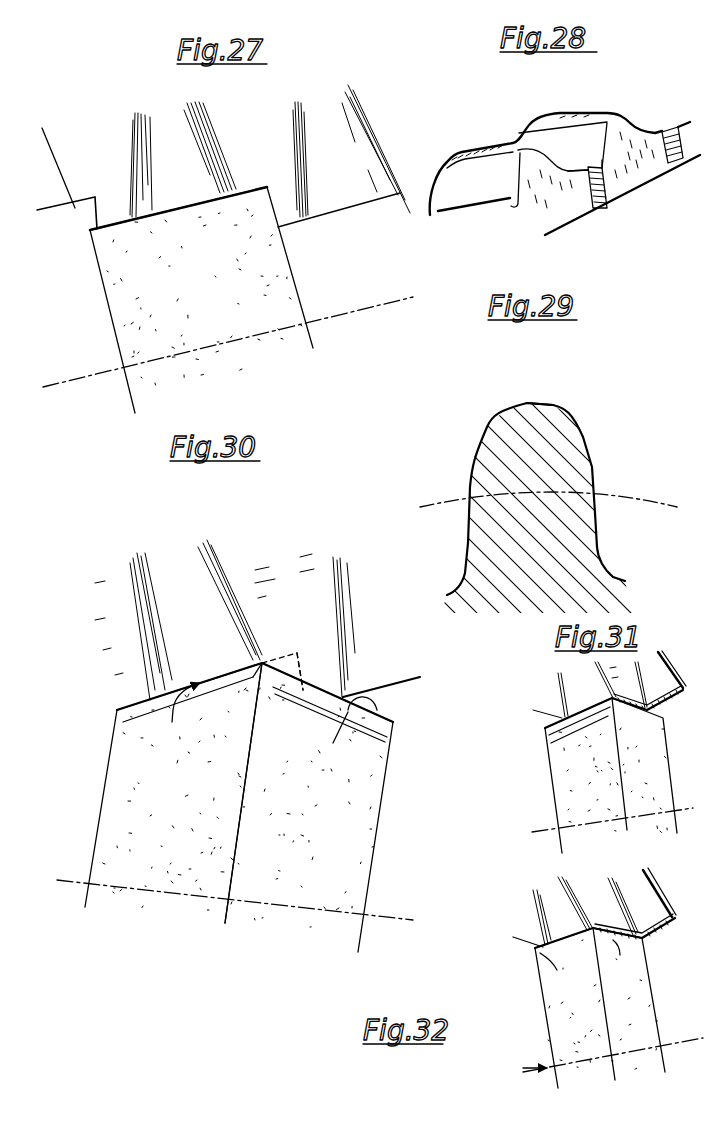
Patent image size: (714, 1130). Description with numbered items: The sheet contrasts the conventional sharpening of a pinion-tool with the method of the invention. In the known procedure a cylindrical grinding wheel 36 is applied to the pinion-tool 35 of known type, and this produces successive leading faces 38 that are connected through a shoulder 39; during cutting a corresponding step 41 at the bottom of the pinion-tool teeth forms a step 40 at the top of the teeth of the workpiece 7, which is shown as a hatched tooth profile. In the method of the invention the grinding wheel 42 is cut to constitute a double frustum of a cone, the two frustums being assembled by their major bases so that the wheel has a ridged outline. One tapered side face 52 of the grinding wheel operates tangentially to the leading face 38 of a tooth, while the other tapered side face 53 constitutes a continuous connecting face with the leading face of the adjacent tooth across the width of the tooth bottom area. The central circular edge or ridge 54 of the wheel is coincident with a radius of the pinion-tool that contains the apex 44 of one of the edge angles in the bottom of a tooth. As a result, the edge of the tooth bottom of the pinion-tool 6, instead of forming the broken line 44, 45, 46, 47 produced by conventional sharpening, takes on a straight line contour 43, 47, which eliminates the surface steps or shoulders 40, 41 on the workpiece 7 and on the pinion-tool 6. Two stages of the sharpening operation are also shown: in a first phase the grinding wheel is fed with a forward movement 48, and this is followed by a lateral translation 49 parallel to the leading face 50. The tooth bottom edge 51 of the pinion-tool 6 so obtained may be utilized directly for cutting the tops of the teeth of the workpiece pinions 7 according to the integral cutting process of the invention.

In FIG. 31, the pinion-tool 6 is at (663, 677).
In FIG. 32, the pinion-tool 6 is at (642, 888).
In FIG. 29, the workpiece 7 is at (572, 472).
In FIG. 27, the pinion-tool of known type 35 is at (102, 177).
In FIG. 27, the cylindrical grinding wheel 36 is at (127, 296).
In FIG. 27, the leading face 38 is at (340, 213).
In FIG. 28, the leading face 38 is at (630, 172).
In FIG. 27, the shoulder 39 is at (95, 213).
In FIG. 28, the shoulder 39 is at (597, 194).
In FIG. 30, the shoulder 39 is at (302, 660).
In FIG. 29, the step 40 is at (527, 403).
In FIG. 28, the step 41 is at (588, 164).
In FIG. 30, the grinding wheel 42 is at (132, 803).
In FIG. 31, the grinding wheel 42 is at (565, 752).
In FIG. 32, the grinding wheel 42 is at (562, 1022).
In FIG. 30, the straight line contour 43 is at (293, 677).
In FIG. 30, the apex of edge angle 44 is at (265, 658).
In FIG. 30, the broken line segment 45 is at (293, 650).
In FIG. 30, the broken line segment 46 is at (313, 707).
In FIG. 30, the edge segment 47 is at (342, 693).
In FIG. 31, the forward movement 48 is at (577, 763).
In FIG. 32, the lateral translation 49 is at (618, 978).
In FIG. 32, the leading face 50 is at (562, 947).
In FIG. 32, the tooth bottom edge 51 is at (617, 939).
In FIG. 30, the tapered side face 52 is at (180, 715).
In FIG. 30, the tapered side face 53 is at (332, 740).
In FIG. 30, the central circular edge or ridge 54 is at (238, 803).